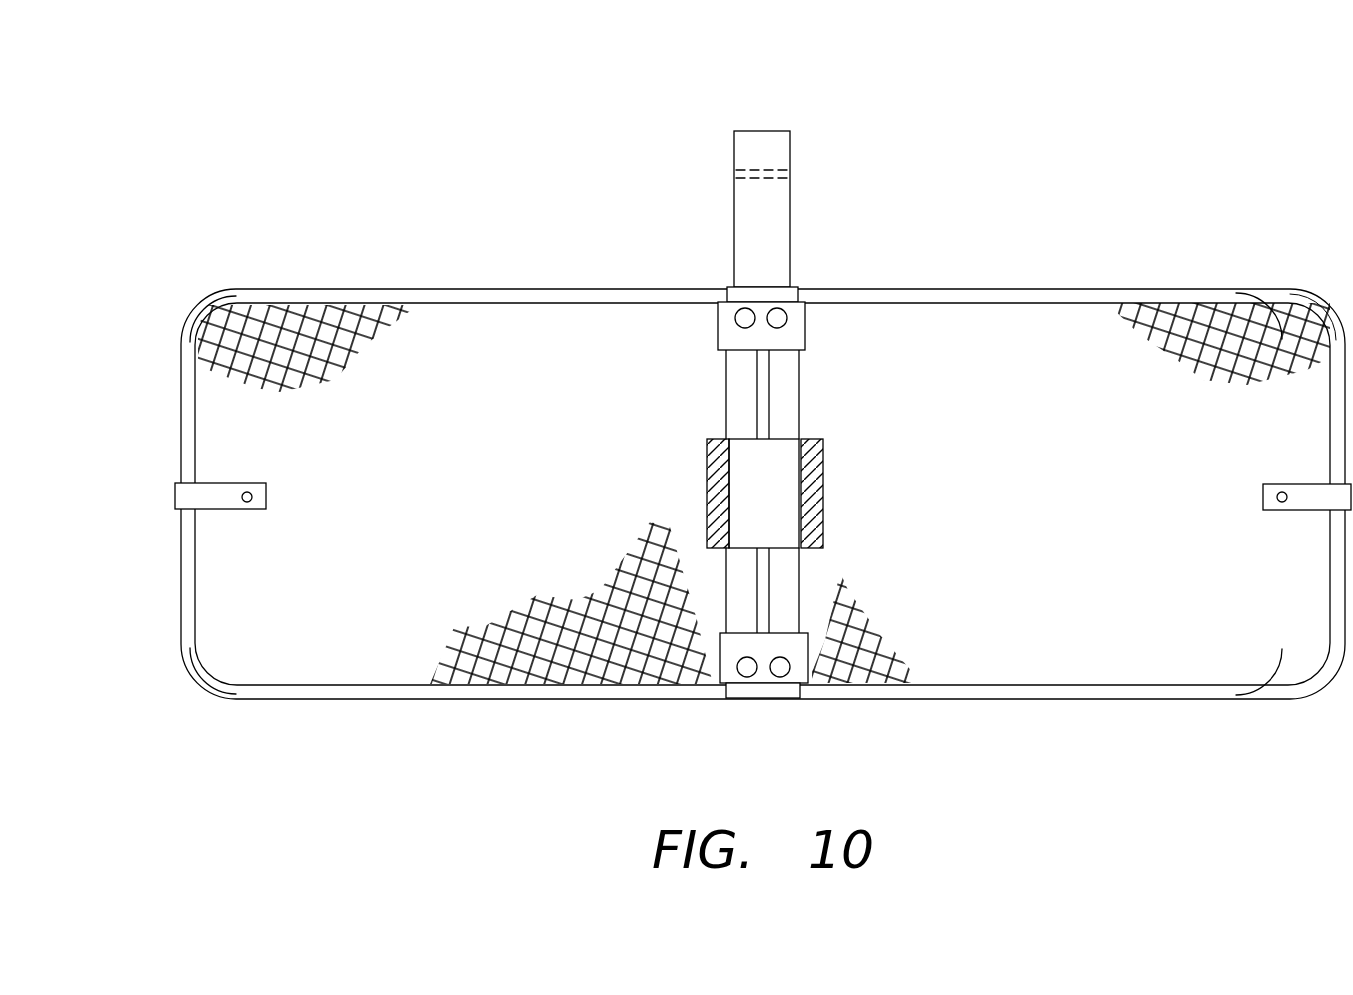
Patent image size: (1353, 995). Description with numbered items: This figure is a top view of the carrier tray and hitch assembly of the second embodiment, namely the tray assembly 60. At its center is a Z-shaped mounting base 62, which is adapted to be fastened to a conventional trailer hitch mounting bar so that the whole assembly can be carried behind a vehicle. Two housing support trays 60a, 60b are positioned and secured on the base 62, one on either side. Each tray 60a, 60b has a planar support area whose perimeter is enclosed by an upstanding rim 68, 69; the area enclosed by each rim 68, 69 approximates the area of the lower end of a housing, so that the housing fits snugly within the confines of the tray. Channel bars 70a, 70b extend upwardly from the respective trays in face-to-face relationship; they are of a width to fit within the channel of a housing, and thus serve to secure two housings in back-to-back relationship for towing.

The tray assembly 60 is at (763, 360).
The housing support tray 60a is at (1046, 580).
The housing support tray 60b is at (415, 562).
The Z-shaped mounting base 62 is at (790, 218).
The upstanding rim 68 is at (1233, 289).
The upstanding rim 69 is at (251, 290).
The channel bar 70a is at (823, 470).
The channel bar 70b is at (707, 470).